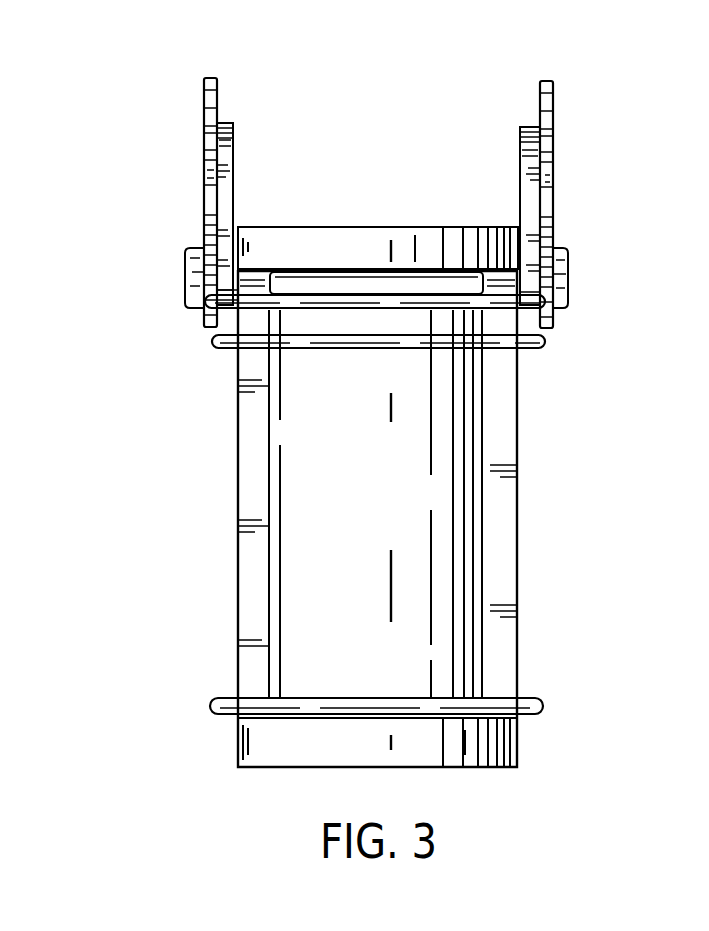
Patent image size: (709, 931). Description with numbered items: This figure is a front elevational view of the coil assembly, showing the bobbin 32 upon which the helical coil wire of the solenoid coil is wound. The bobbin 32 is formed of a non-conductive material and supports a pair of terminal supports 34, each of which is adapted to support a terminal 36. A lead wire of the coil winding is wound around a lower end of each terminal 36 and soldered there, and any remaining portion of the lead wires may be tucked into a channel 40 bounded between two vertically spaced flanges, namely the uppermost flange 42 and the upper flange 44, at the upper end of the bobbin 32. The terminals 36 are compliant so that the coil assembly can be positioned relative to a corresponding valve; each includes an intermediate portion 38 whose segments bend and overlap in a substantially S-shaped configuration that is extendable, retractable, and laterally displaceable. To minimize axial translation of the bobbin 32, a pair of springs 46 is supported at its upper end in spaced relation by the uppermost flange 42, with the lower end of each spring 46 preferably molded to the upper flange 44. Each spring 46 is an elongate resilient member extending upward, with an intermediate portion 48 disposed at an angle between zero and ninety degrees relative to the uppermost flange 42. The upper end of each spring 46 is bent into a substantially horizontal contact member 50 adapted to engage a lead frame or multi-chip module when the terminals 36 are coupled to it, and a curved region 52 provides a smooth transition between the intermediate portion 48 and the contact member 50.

The bobbin 32 is at (484, 592).
The terminal supports 34 is at (185, 268).
The terminal 36 is at (228, 70).
The intermediate portion 38 is at (196, 172).
The channel 40 is at (230, 325).
The uppermost flange 42 is at (225, 347).
The upper flange 44 is at (203, 305).
The springs 46 is at (248, 142).
The intermediate portion 48 is at (520, 225).
The contact member 50 is at (533, 148).
The curved region 52 is at (237, 140).